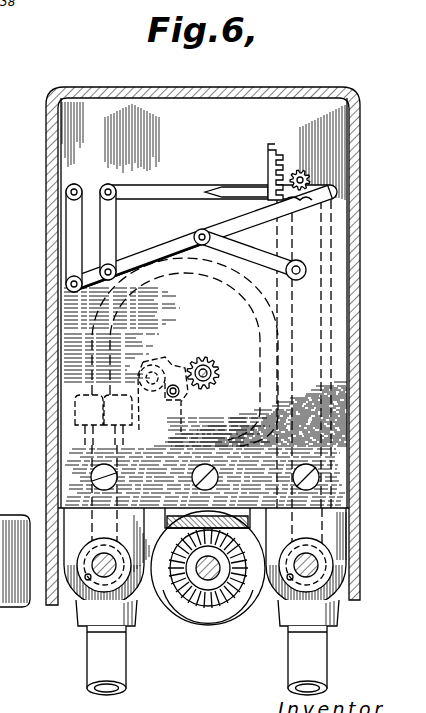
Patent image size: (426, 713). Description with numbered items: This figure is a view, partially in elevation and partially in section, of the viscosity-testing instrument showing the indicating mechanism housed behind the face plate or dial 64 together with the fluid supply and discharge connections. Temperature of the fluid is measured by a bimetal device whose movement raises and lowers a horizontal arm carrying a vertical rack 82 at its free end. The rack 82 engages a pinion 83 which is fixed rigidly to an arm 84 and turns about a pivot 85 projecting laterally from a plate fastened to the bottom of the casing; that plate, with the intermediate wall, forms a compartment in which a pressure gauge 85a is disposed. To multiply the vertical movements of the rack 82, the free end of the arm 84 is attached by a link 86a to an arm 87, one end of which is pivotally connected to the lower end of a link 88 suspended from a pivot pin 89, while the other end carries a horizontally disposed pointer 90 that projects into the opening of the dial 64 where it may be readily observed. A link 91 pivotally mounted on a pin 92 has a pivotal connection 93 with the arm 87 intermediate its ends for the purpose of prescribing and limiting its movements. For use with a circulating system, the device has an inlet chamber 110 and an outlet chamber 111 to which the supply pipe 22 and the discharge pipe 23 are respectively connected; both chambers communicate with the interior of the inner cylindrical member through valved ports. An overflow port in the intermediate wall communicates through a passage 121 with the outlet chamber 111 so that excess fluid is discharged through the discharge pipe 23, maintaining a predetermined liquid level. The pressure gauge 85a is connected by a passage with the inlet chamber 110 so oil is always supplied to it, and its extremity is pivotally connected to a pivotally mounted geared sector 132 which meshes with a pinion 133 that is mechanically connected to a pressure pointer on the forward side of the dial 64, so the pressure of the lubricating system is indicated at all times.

The supply pipe 22 is at (131, 665).
The discharge pipe 23 is at (287, 668).
The face plate or dial 64 is at (12, 293).
The vertical rack 82 is at (280, 166).
The pinion 83 is at (306, 176).
The arm 84 is at (184, 185).
The pivot 85 is at (305, 199).
The pressure gauge 85a is at (206, 282).
The link 86a is at (112, 243).
The arm 87 is at (163, 266).
The link 88 is at (77, 252).
The pivot pin 89 is at (78, 186).
The pointer 90 is at (230, 186).
The link 91 is at (255, 257).
The pin 92 is at (306, 268).
The pivotal connection 93 is at (210, 224).
The inlet chamber 110 is at (86, 580).
The outlet chamber 111 is at (291, 579).
The passage 121 is at (328, 353).
The geared sector 132 is at (168, 362).
The pinion 133 is at (213, 366).